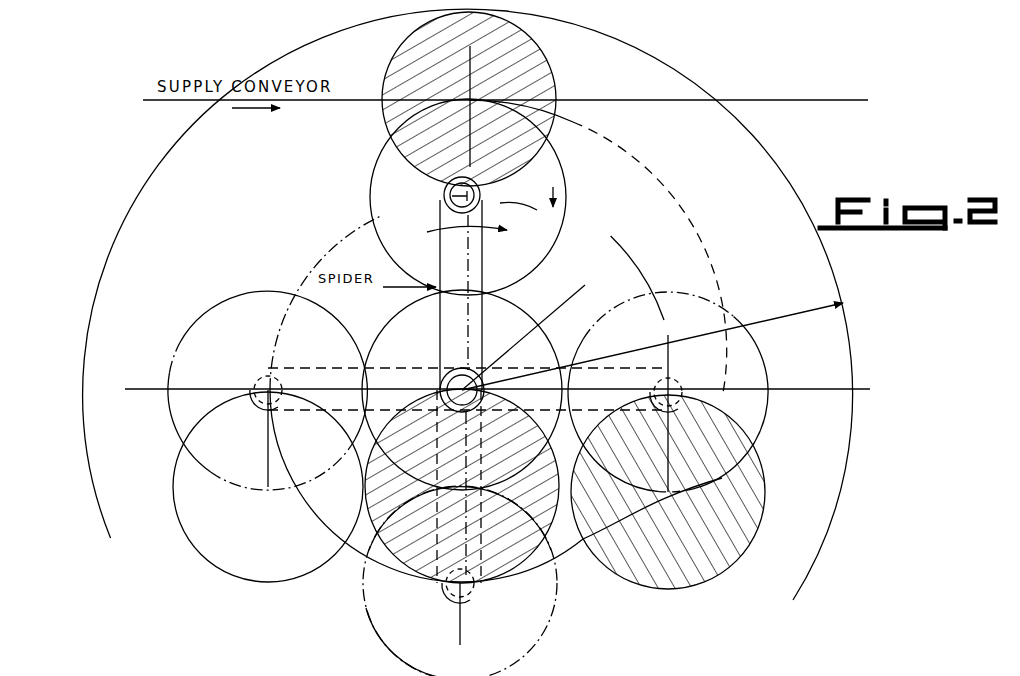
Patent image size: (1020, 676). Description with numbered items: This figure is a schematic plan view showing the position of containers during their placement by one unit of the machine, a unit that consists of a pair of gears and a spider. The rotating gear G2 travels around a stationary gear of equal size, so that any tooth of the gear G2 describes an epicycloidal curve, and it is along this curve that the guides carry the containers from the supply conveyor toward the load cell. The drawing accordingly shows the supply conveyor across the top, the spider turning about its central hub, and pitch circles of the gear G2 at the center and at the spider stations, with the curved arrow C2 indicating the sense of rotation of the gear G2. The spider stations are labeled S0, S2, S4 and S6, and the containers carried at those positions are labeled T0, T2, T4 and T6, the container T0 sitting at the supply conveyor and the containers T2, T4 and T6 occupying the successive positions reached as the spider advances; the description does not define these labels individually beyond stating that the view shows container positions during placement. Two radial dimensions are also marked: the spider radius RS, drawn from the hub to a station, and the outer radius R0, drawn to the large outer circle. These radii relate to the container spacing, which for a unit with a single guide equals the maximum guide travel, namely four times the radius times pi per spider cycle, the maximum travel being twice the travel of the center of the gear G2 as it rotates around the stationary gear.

The tube at supply position T0 is at (469, 99).
The spider station 0 (supply station) S0 is at (438, 193).
The gear G2 is at (563, 227).
The rotation direction of gear G2 C2 is at (490, 209).
The spider radius RS = phi G1 RS is at (627, 251).
The outer radius R0 = 2 phi G1 R0 is at (652, 331).
The spider station 6 S6 is at (267, 390).
The tube at station 6 T6 is at (268, 486).
The tube at station 4 T4 is at (462, 486).
The spider station 4 S4 is at (460, 581).
The spider station 2 S2 is at (668, 392).
The tube at station 2 T2 is at (668, 462).